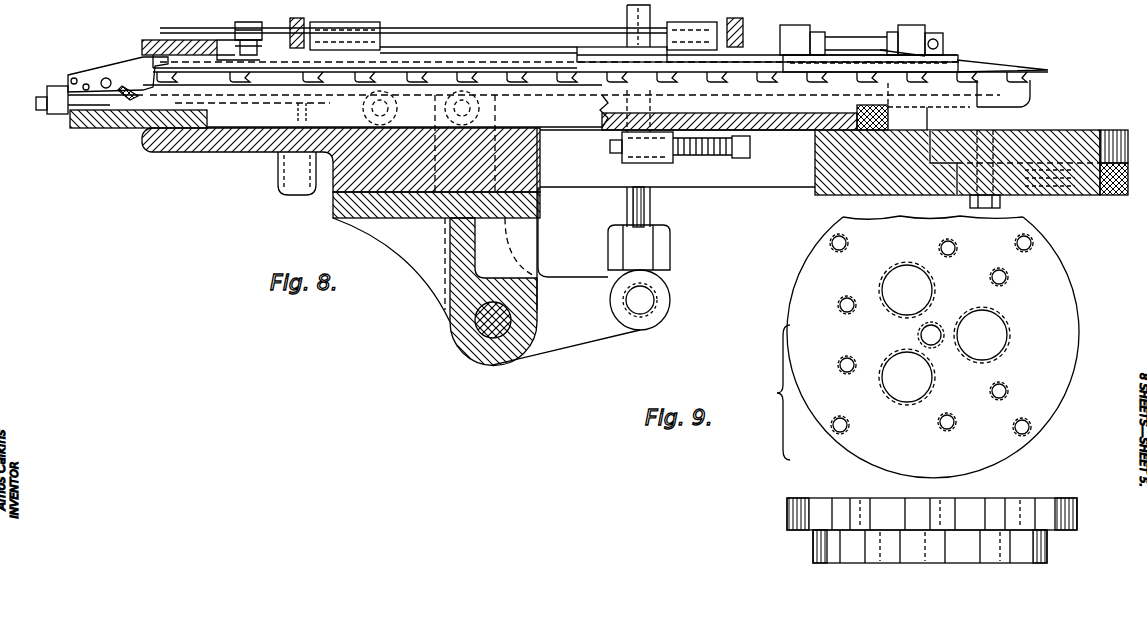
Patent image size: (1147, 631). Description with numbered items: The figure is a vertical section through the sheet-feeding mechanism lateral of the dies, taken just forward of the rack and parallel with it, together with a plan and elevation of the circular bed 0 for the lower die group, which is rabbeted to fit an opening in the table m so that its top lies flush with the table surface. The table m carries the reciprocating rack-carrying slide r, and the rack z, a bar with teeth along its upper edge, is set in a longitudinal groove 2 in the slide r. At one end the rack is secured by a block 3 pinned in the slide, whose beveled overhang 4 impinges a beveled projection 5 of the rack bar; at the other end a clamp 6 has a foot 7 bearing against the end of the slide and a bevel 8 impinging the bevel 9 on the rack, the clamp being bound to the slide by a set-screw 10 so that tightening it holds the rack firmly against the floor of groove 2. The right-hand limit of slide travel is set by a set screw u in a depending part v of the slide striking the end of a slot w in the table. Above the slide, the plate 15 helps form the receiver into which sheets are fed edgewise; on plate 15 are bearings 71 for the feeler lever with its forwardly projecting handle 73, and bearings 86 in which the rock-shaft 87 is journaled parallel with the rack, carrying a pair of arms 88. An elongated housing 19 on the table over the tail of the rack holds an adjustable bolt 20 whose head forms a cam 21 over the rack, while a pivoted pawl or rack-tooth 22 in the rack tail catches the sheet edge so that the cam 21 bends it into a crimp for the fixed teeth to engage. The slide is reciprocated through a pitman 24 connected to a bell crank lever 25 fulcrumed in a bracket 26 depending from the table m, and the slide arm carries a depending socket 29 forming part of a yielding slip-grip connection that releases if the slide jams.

In FIG. 8, the circular bed 0 is at (1090, 133).
In FIG. 9, the circular bed 0 is at (886, 470).
In FIG. 8, the longitudinal groove 2 is at (803, 128).
In FIG. 8, the block 3 is at (881, 130).
In FIG. 8, the beveled overhang 4 is at (860, 108).
In FIG. 8, the beveled projection 5 is at (851, 128).
In FIG. 8, the clamp 6 is at (47, 92).
In FIG. 8, the foot 7 is at (66, 118).
In FIG. 8, the bevel 8 is at (62, 90).
In FIG. 8, the bevel 9 is at (85, 102).
In FIG. 8, the set-screw 10 is at (38, 110).
In FIG. 8, the plate 15 is at (596, 50).
In FIG. 8, the housing 19 is at (190, 42).
In FIG. 8, the bolt 20 is at (263, 40).
In FIG. 8, the cam 21 is at (240, 60).
In FIG. 8, the pawl or rack-tooth 22 is at (128, 67).
In FIG. 8, the pitman 24 is at (650, 208).
In FIG. 8, the bell crank lever 25 is at (565, 275).
In FIG. 8, the bracket 26 is at (418, 276).
In FIG. 8, the depending socket 29 is at (280, 180).
In FIG. 8, the bearings 71 is at (895, 32).
In FIG. 8, the handle 73 is at (944, 44).
In FIG. 8, the bearings 86 is at (708, 14).
In FIG. 8, the rock-shaft 87 is at (481, 32).
In FIG. 8, the arms 88 is at (300, 20).
In FIG. 8, the rack-carrying slide r is at (590, 128).
In FIG. 8, the set screw u is at (716, 160).
In FIG. 8, the depending part v is at (622, 163).
In FIG. 8, the slot w is at (772, 180).
In FIG. 8, the rack z is at (780, 128).
In FIG. 8, the table m is at (832, 190).